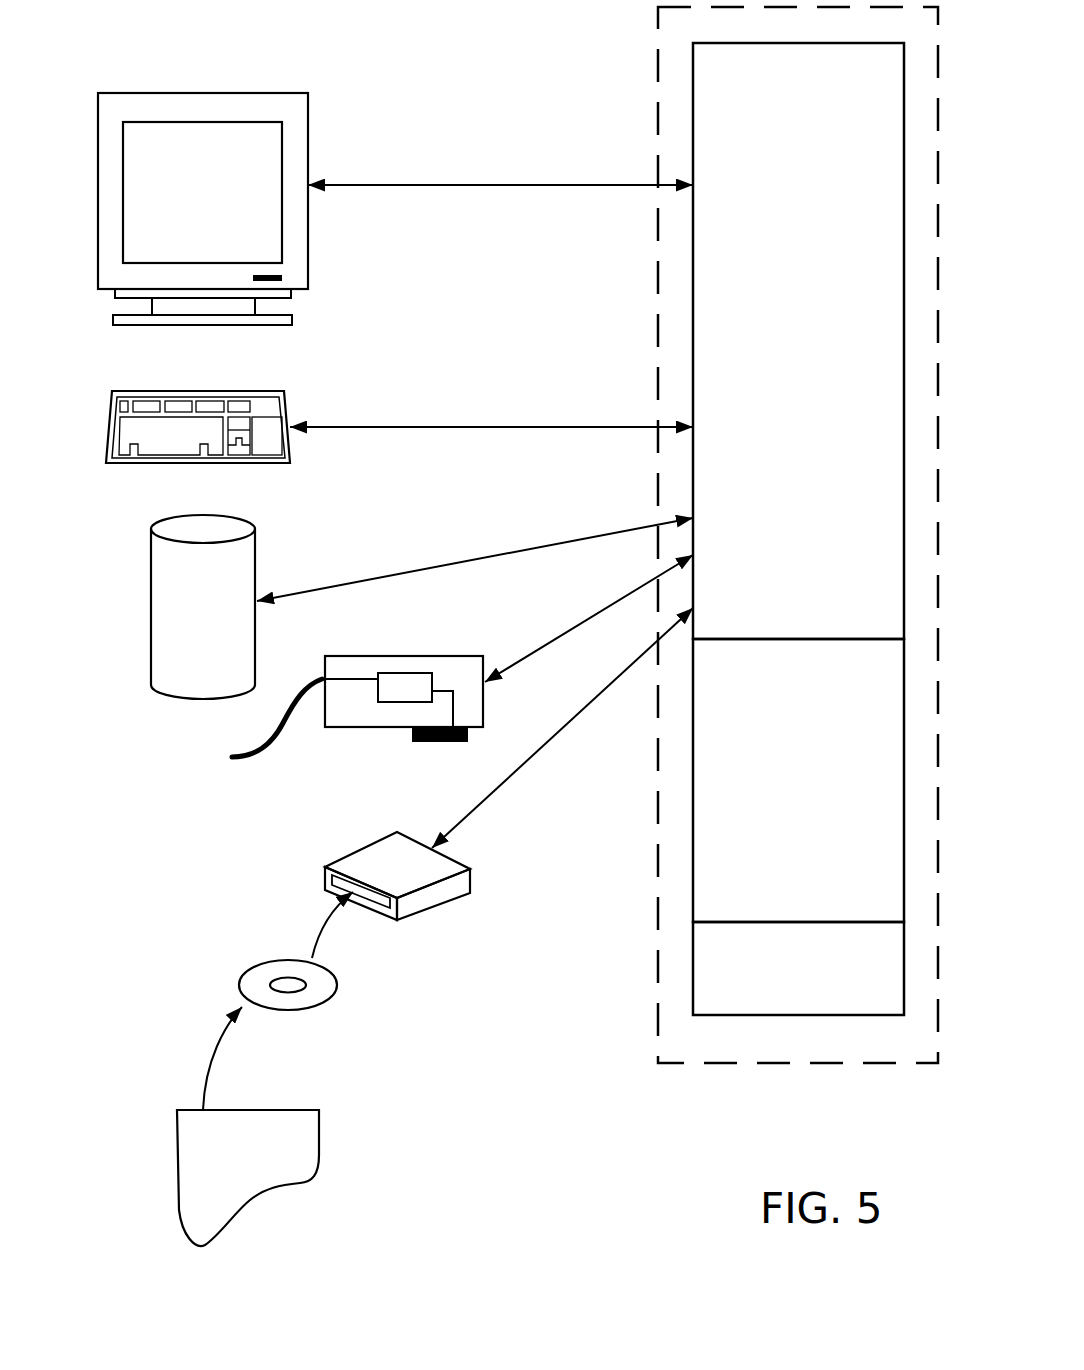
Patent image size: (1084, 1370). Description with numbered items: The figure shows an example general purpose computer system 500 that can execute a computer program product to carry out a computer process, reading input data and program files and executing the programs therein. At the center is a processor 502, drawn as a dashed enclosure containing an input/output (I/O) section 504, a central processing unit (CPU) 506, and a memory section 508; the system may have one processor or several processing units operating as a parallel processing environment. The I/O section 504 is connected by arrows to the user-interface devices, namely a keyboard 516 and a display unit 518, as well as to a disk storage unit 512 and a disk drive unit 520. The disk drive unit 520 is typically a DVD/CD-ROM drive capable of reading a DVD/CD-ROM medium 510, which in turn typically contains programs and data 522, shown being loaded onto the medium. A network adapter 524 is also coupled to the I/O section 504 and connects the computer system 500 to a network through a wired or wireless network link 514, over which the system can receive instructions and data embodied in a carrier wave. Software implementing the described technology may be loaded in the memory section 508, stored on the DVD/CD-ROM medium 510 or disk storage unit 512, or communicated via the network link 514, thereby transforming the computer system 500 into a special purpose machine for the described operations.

The computer system 500 is at (560, 1090).
The processor 502 is at (658, 78).
The input/output (I/O) section 504 is at (780, 367).
The central processing unit (CPU) 506 is at (780, 806).
The memory section 508 is at (780, 992).
The DVD/CD-ROM medium 510 is at (258, 960).
The disk storage unit 512 is at (150, 551).
The network link 514 is at (258, 757).
The keyboard 516 is at (157, 391).
The display unit 518 is at (168, 93).
The disk drive unit 520 is at (378, 868).
The programs and data 522 is at (319, 1134).
The network adapter 524 is at (378, 729).